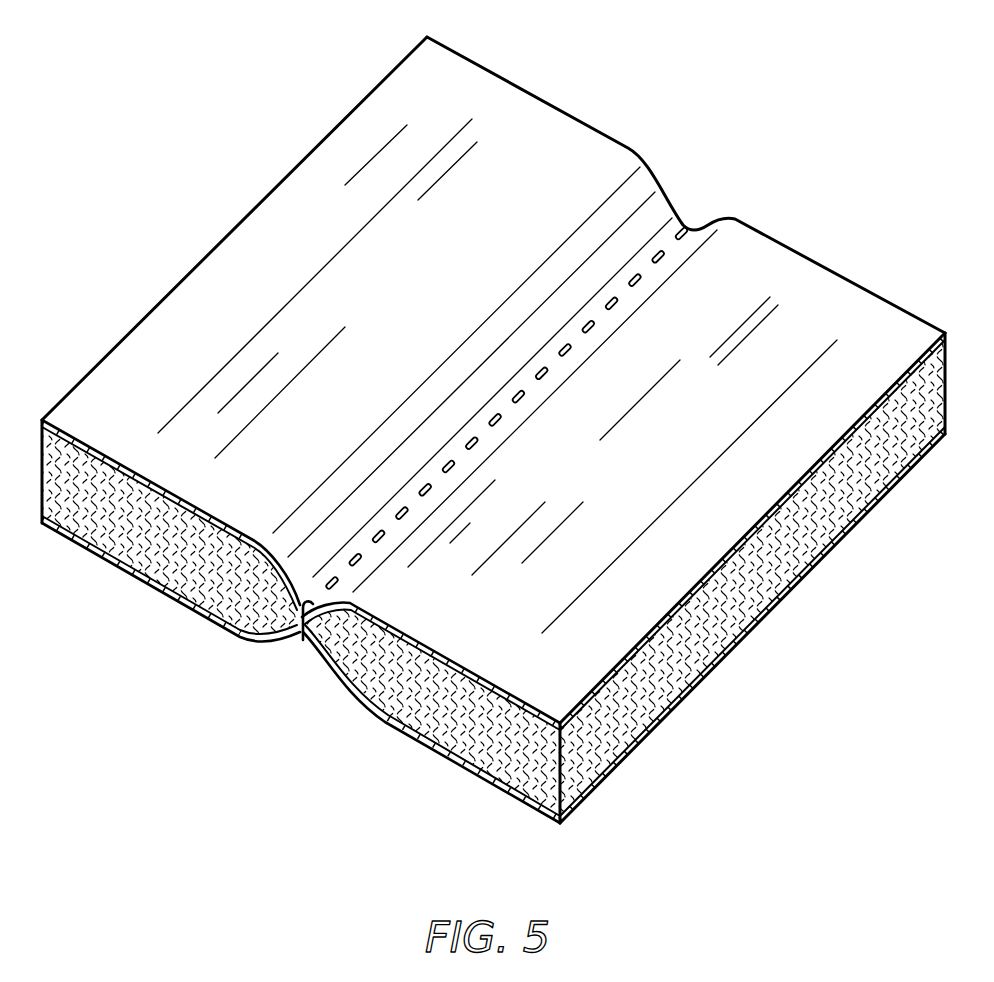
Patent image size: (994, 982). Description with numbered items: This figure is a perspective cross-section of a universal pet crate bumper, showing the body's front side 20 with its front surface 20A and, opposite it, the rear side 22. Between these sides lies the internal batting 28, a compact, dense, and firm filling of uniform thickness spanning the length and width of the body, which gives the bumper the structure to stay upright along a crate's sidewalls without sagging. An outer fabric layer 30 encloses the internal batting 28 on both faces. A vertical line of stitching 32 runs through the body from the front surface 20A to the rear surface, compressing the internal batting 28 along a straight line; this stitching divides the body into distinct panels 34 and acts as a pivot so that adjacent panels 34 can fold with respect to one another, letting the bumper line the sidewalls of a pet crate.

The front side 20 is at (235, 253).
The front surface 20A is at (412, 305).
The rear side 22 is at (137, 585).
The internal batting 28 is at (202, 587).
The outer fabric layer 30 is at (97, 460).
The vertical lines of stitching 32 is at (302, 640).
The panels 34 is at (554, 130).